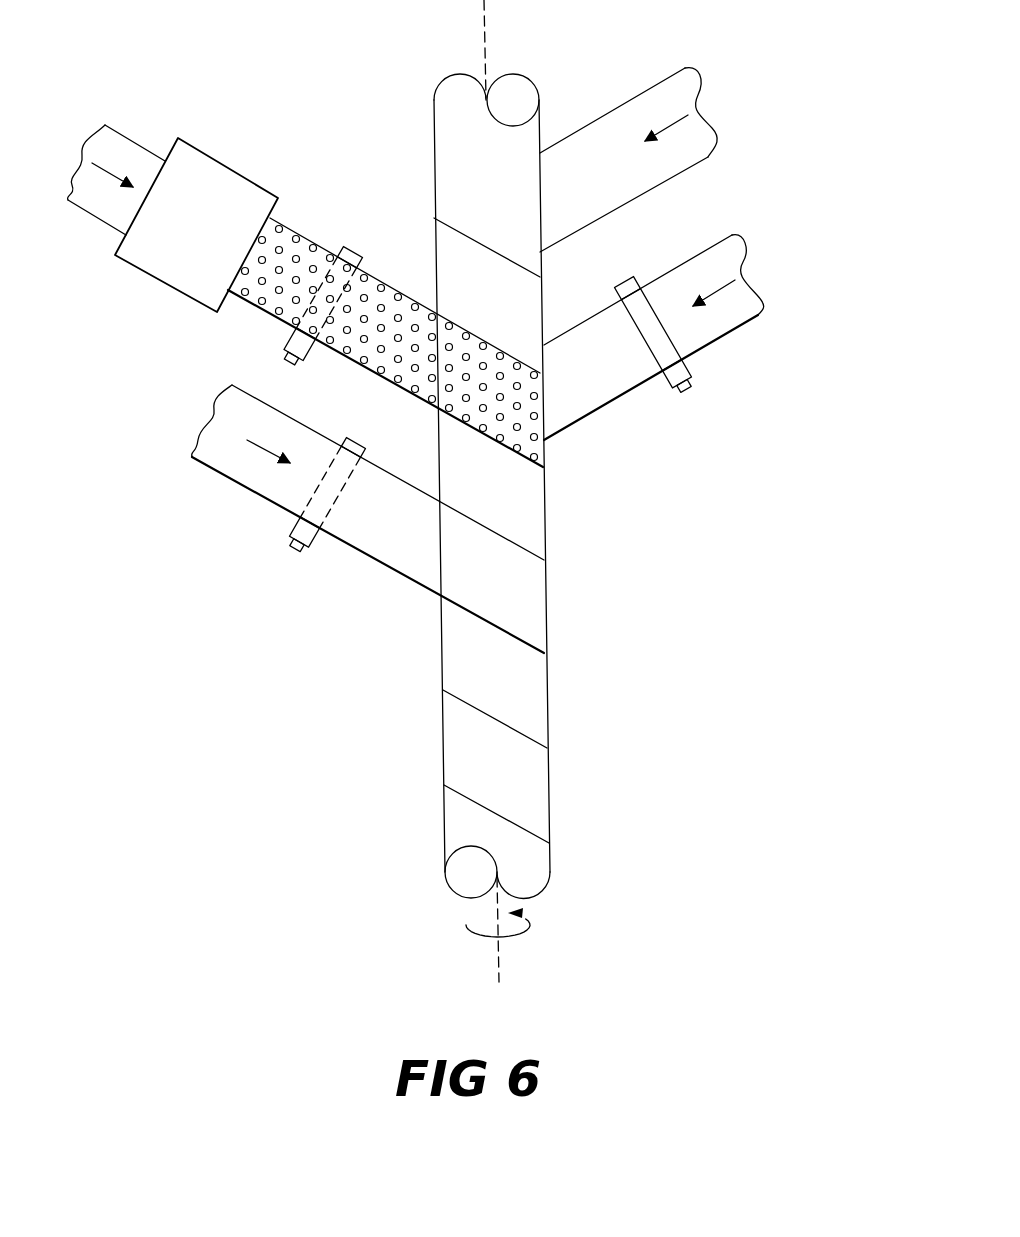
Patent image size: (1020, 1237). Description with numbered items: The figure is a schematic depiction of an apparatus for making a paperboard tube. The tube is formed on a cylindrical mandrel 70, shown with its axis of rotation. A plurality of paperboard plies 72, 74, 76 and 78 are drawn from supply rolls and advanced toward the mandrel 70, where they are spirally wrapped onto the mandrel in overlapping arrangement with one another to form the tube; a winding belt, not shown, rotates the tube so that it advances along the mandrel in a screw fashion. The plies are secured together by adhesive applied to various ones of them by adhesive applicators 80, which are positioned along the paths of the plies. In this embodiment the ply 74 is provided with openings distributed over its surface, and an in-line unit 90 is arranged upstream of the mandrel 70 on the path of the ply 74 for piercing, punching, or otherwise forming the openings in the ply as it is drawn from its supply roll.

The cylindrical mandrel 70 is at (457, 118).
The paperboard ply 72 is at (668, 158).
The paperboard ply with openings 74 is at (388, 317).
The paperboard ply 76 is at (558, 420).
The paperboard ply 78 is at (407, 560).
The adhesive applicator 80 is at (272, 342).
The in-line unit 90 is at (207, 172).